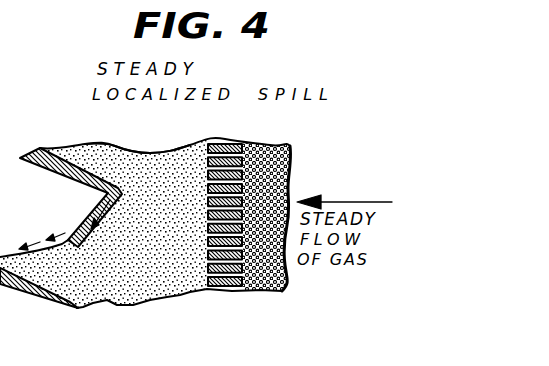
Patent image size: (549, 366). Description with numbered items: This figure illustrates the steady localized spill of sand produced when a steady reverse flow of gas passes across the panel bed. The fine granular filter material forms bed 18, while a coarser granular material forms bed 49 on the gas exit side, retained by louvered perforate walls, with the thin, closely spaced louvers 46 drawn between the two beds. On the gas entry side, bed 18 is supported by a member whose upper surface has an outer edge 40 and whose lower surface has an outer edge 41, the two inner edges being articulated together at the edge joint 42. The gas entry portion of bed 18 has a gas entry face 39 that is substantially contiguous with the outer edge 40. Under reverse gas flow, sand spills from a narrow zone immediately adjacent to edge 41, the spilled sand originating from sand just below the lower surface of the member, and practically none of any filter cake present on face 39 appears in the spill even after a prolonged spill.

The bed of granular filter material 18 is at (176, 230).
The gas entry face 39 is at (32, 257).
The outer edge of upper surface 40 is at (0, 293).
The outer edge of lower surface 41 is at (72, 230).
The inner edge joint 42 is at (127, 192).
The louvers 46 is at (243, 162).
The granular material bed 49 is at (263, 162).